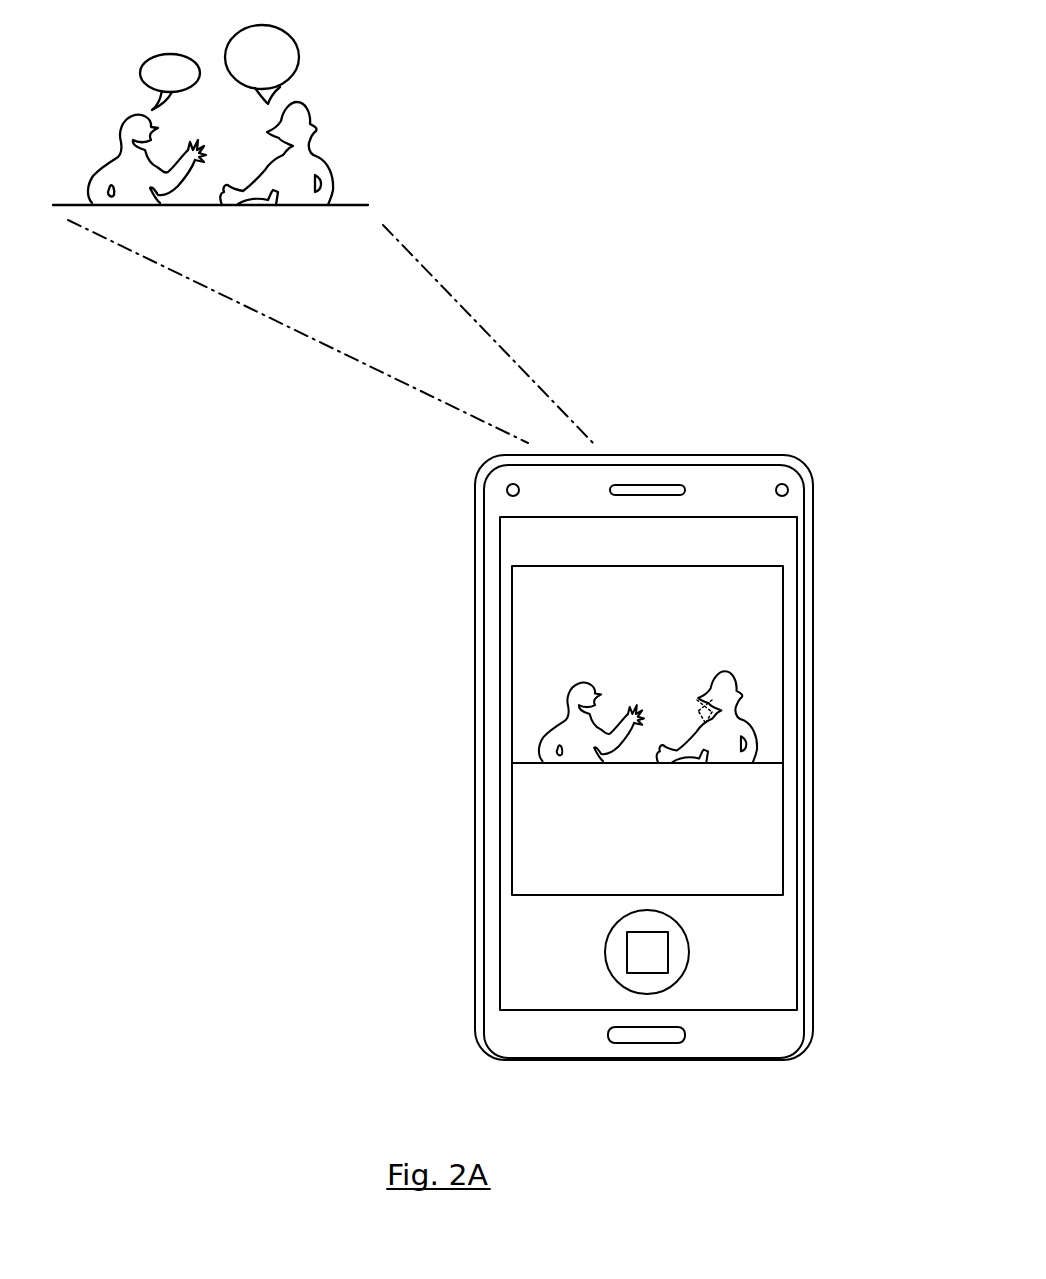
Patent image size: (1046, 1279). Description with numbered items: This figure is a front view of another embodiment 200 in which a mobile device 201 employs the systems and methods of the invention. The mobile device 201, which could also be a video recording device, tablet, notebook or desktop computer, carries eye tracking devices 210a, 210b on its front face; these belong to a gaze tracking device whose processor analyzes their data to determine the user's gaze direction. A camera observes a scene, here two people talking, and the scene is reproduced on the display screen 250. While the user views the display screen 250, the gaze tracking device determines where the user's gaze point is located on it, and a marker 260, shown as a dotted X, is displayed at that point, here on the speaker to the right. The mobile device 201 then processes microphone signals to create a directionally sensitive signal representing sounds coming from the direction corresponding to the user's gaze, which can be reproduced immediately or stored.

The embodiment 200 is at (631, 695).
The mobile device 201 is at (787, 457).
The eye tracking device 210a is at (507, 492).
The eye tracking device 210b is at (788, 487).
The display screen 250 is at (500, 872).
The marker 260 is at (700, 718).